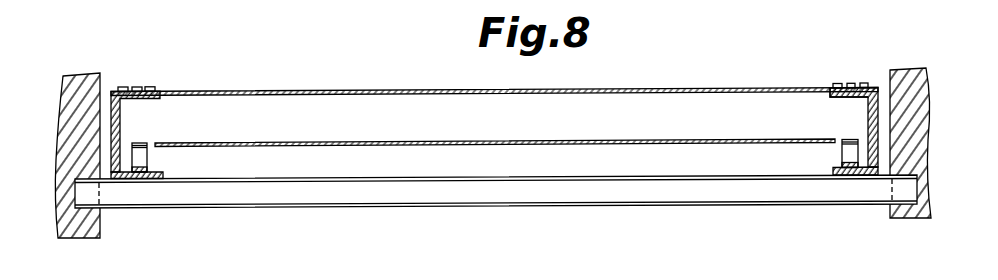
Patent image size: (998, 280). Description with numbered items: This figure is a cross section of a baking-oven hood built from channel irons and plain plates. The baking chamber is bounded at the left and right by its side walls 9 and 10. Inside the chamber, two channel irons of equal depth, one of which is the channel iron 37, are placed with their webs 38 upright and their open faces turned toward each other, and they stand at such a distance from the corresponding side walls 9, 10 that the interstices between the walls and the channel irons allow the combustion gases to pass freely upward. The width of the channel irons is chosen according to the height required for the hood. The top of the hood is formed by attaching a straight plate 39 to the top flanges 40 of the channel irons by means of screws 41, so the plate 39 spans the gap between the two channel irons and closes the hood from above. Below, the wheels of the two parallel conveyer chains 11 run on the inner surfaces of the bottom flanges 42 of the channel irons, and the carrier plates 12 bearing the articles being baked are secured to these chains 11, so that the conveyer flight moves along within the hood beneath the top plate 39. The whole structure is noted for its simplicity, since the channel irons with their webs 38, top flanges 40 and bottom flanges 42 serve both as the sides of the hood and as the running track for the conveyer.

The side wall 9 is at (73, 124).
The side wall 10 is at (912, 151).
The wheeled chain 11 is at (143, 158).
The plate 12 is at (425, 142).
The channel iron 37 is at (835, 94).
The web 38 is at (867, 119).
The straight plate 39 is at (434, 87).
The top flange 40 is at (137, 73).
The screw 41 is at (150, 87).
The bottom flange 42 is at (135, 179).